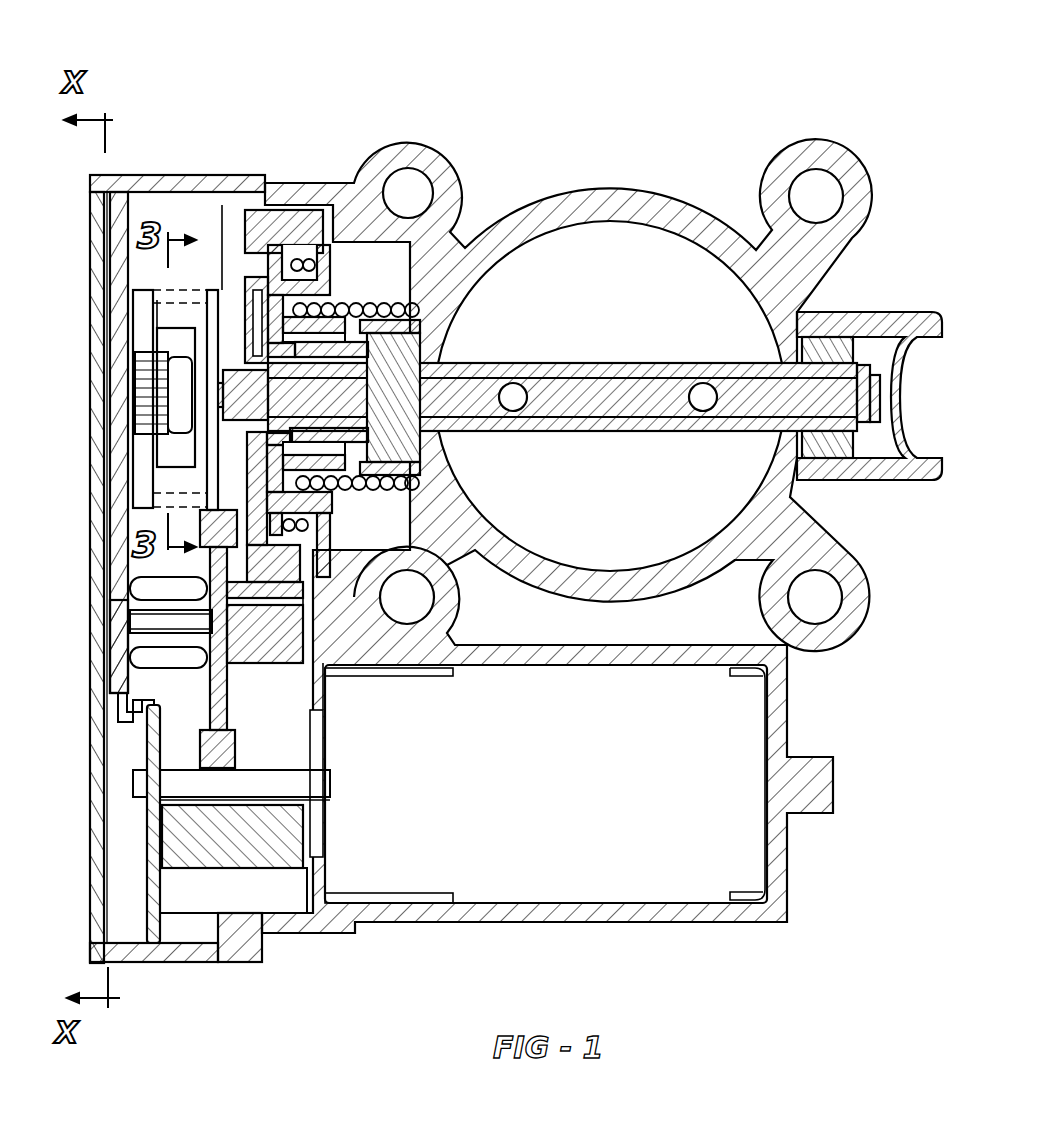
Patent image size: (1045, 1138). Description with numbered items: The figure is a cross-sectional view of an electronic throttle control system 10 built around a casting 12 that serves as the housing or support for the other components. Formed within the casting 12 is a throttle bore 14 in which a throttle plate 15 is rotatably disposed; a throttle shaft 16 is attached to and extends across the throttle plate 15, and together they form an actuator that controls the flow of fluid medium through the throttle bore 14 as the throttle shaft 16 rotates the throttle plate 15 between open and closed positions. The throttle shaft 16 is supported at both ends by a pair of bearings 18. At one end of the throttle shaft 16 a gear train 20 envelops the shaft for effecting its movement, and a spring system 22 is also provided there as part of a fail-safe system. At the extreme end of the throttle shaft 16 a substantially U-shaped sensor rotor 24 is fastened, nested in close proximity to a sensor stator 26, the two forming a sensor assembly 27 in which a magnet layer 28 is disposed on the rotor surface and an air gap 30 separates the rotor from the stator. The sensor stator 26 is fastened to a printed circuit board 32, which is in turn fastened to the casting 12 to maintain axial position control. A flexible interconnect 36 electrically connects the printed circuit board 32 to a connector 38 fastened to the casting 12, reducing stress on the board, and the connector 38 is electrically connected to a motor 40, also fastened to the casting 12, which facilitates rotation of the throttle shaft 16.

The electronic throttle control system 10 is at (543, 502).
The casting 12 is at (214, 197).
The throttle bore 14 is at (610, 323).
The throttle plate 15 is at (650, 250).
The throttle shaft 16 is at (750, 360).
The bearings 18 is at (888, 363).
The gear train 20 is at (222, 243).
The spring system 22 is at (308, 262).
The sensor rotor 24 is at (118, 368).
The sensor stator 26 is at (180, 393).
The sensor assembly 27 is at (213, 298).
The magnet layer 28 is at (170, 338).
The air gap 30 is at (168, 349).
The printed circuit board 32 is at (127, 630).
The flexible interconnect 36 is at (117, 707).
The connector 38 is at (233, 843).
The motor 40 is at (577, 843).